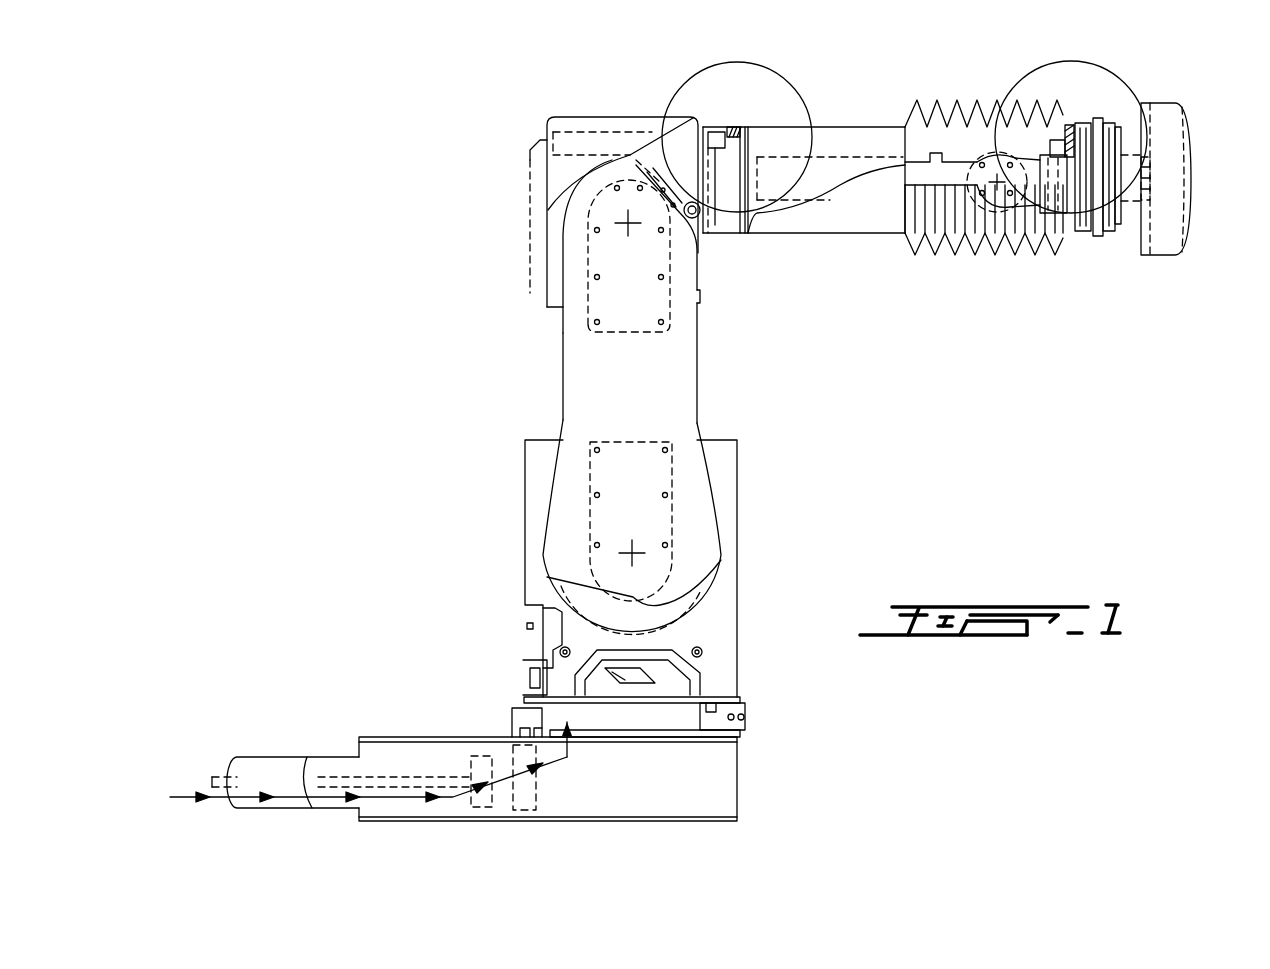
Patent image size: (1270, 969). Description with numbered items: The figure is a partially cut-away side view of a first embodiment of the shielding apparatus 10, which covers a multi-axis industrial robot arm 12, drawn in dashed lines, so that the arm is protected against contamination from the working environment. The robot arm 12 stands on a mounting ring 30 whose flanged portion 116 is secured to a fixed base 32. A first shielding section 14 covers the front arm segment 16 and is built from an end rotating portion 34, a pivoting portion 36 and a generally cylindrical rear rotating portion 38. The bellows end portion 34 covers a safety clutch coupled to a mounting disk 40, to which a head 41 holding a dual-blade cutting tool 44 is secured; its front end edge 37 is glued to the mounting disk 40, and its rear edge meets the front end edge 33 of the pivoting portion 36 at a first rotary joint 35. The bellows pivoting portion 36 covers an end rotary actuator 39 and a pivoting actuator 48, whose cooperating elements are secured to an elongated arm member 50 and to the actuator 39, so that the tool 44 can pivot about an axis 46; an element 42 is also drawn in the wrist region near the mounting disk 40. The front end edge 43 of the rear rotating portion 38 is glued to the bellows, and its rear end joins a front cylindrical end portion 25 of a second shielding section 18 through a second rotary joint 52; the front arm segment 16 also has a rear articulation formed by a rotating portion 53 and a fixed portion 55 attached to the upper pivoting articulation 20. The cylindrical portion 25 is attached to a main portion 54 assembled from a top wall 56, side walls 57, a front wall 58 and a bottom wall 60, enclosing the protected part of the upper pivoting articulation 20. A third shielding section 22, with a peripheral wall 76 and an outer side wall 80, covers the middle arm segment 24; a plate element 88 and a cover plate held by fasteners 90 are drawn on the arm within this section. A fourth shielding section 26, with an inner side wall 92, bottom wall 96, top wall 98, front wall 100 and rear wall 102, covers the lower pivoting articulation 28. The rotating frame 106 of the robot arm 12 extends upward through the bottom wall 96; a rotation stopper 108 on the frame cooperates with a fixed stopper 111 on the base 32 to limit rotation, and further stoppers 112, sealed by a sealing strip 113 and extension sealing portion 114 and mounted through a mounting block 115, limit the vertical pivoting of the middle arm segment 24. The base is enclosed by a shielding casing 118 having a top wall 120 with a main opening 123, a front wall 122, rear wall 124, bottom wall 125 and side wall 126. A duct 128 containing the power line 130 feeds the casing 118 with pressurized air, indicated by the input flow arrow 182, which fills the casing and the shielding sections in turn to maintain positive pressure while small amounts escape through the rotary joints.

The shielding apparatus 10 is at (505, 324).
The robot arm 12 is at (574, 118).
The first shielding section 14 is at (853, 120).
The front arm segment 16 is at (830, 160).
The second shielding section 18 is at (624, 117).
The upper pivoting articulation 20 is at (560, 140).
The third shielding section 22 is at (670, 372).
The middle arm segment 24 is at (640, 656).
The front cylindrical end portion 25 is at (743, 233).
The fourth shielding section 26 is at (740, 457).
The lower pivoting articulation 28 is at (553, 628).
The mounting ring 30 is at (680, 716).
The fixed base 32 is at (712, 770).
The front end edge of pivoting portion 33 is at (1062, 235).
The end rotating portion 34 is at (1100, 240).
The first rotary joint 35 is at (1068, 125).
The pivoting portion 36 is at (947, 110).
The front end edge of end portion bellows 37 is at (1113, 232).
The rear rotating portion 38 is at (869, 220).
The end rotary actuator 39 is at (1055, 138).
The mounting disk 40 is at (1122, 225).
The head 41 is at (1195, 148).
The wrist shaft 42 is at (1127, 158).
The front end edge of rear rotating portion 43 is at (884, 127).
The tool 44 is at (1146, 101).
The pivot axis 46 is at (1023, 253).
The pivoting actuator 48 is at (988, 200).
The elongated arm member 50 is at (822, 180).
The second rotary joint 52 is at (745, 130).
The rotating portion 53 is at (730, 128).
The main portion 54 is at (688, 165).
The fixed portion 55 is at (704, 152).
The top wall 56 is at (593, 117).
The side wall 57 is at (555, 231).
The front wall 58 is at (702, 288).
The bottom wall 60 is at (558, 312).
The peripheral wall 76 is at (563, 403).
The outer side wall 80 is at (650, 402).
The mounting plate 88 is at (626, 292).
The fasteners 90 is at (595, 278).
The inner side wall 92 is at (524, 502).
The bottom wall 96 is at (527, 703).
The top wall 98 is at (720, 440).
The front wall 100 is at (720, 489).
The rear wall 102 is at (737, 532).
The rotating frame 106 is at (527, 677).
The rotation stopper 108 is at (740, 709).
The fixed stopper 111 is at (528, 718).
The stoppers 112 is at (685, 660).
The sealing strip 113 is at (695, 668).
The extension sealing portion 114 is at (688, 677).
The mounting block 115 is at (648, 683).
The flanged portion 116 is at (717, 731).
The shielding casing 118 is at (740, 787).
The top wall 120 is at (385, 738).
The front wall 122 is at (737, 813).
The main opening 123 is at (587, 743).
The rear wall 124 is at (357, 745).
The bottom wall 125 is at (617, 820).
The side wall 126 is at (708, 792).
The duct 128 is at (253, 756).
The line 130 is at (378, 783).
The input air flow 182 is at (520, 773).